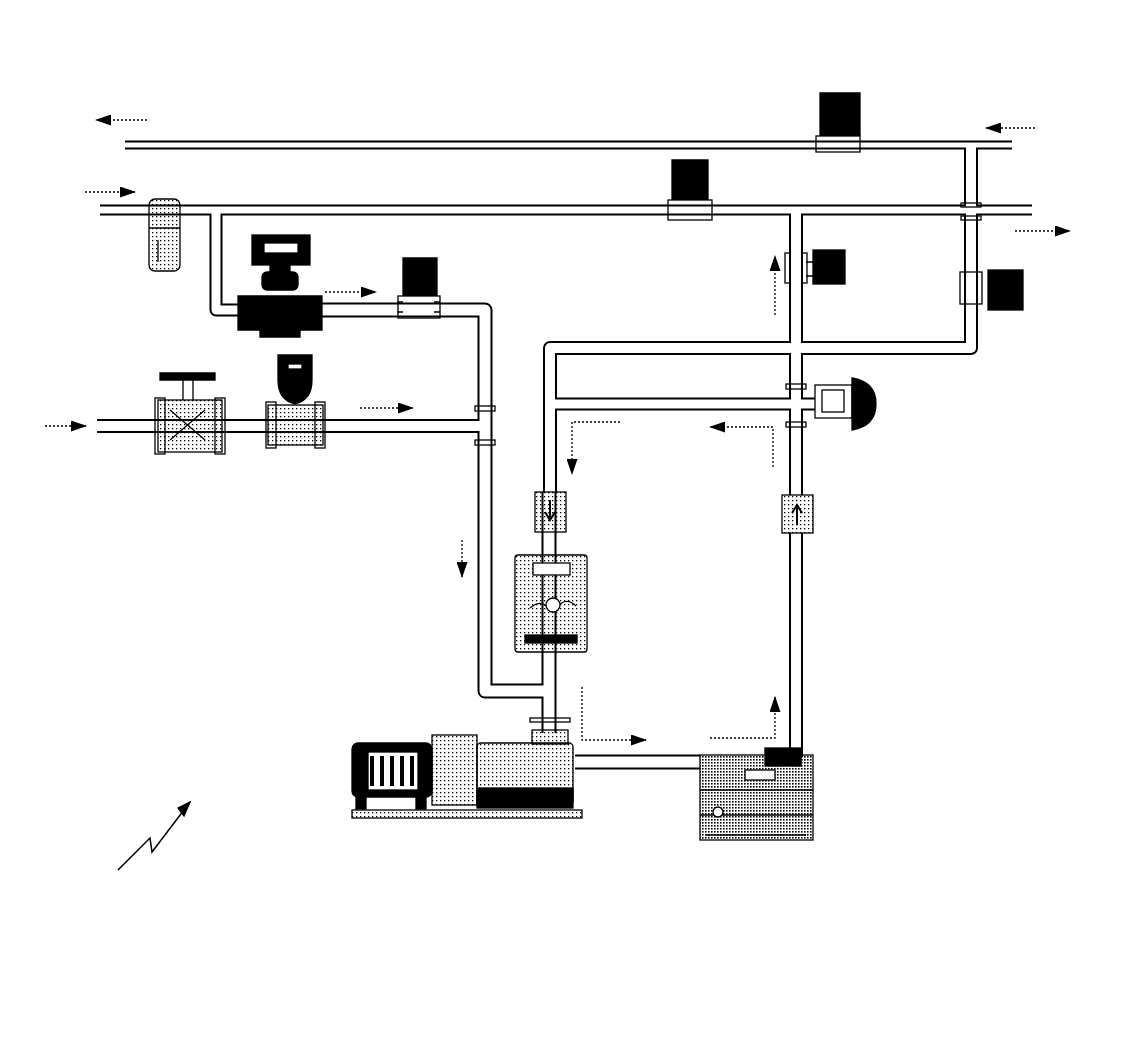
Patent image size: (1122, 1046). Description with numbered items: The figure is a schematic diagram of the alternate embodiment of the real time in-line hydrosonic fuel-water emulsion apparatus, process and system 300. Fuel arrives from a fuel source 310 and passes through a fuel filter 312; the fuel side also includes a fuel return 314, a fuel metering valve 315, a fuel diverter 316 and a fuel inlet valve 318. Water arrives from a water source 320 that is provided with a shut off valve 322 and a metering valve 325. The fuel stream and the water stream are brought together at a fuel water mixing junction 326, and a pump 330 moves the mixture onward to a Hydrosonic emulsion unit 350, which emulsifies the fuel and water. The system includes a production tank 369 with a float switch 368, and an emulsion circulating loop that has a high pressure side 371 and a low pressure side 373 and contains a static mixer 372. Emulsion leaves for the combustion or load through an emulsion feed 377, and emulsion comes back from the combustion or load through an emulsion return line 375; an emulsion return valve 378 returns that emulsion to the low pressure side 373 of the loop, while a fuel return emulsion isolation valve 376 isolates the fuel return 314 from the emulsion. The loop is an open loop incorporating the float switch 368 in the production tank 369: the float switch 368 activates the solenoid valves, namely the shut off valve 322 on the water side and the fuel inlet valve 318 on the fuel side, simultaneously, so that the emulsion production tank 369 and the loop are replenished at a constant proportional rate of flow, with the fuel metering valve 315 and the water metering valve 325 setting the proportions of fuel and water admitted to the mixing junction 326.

The fuel delivery and circulation system 300 is at (145, 849).
The fuel source 310 is at (100, 216).
The fuel filter 312 is at (165, 272).
The fuel return 314 is at (165, 140).
The fuel metering valve 315 is at (245, 330).
The fuel diverter 316 is at (690, 220).
The fuel inlet valve 318 is at (437, 272).
The water source 320 is at (112, 434).
The shut off valve 322 is at (186, 452).
The metering valve 325 is at (295, 445).
The fuel water mixing junction 326 is at (362, 434).
The pump 330 is at (352, 750).
The Hydrosonic emulsion unit 350 is at (700, 808).
The float switch 368 is at (560, 604).
The production tank 369 is at (587, 582).
The high pressure side 371 is at (805, 625).
The static mixer 372 is at (567, 514).
The low pressure side 373 is at (560, 482).
The emulsion return line 375 is at (978, 178).
The fuel return emulsion isolation valve 376 is at (860, 112).
The emulsion feed 377 is at (804, 314).
The emulsion return valve 378 is at (1023, 294).